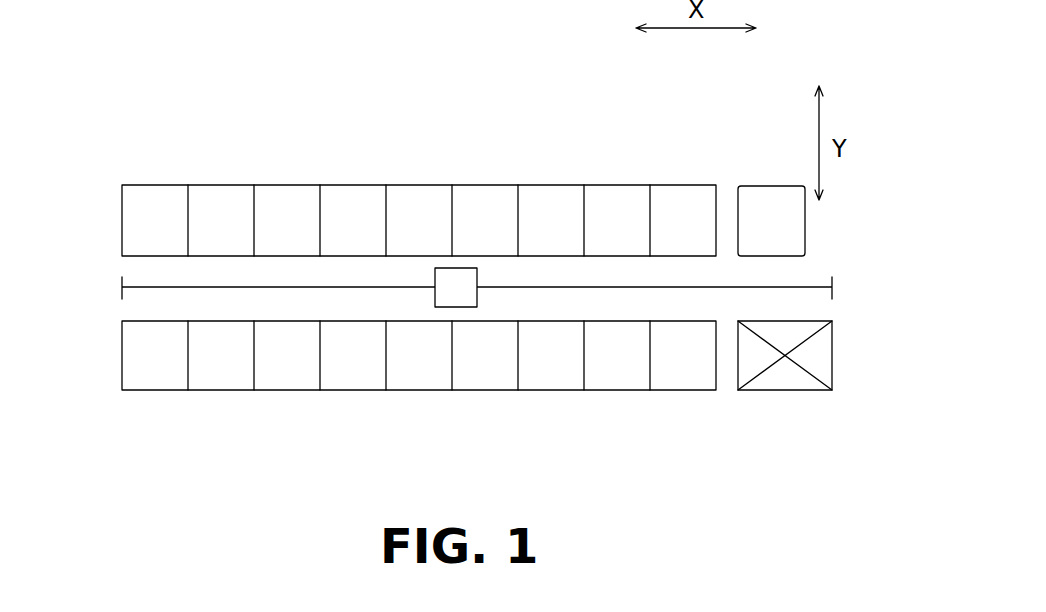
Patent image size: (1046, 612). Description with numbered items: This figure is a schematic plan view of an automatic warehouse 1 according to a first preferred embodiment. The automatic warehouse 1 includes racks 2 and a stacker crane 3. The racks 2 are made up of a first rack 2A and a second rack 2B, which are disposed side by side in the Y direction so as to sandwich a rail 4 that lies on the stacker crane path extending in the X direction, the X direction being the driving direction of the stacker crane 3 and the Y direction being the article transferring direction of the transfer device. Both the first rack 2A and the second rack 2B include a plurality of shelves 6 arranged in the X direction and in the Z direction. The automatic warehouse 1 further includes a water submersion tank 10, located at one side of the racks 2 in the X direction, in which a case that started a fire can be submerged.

The automatic warehouse 1 is at (300, 130).
The racks 2 is at (107, 173).
The first rack 2A is at (183, 170).
The second rack 2B is at (173, 400).
The stacker crane 3 is at (463, 267).
The rail 4 is at (155, 285).
The shelves 6 is at (353, 204).
The water submersion tank 10 is at (755, 197).